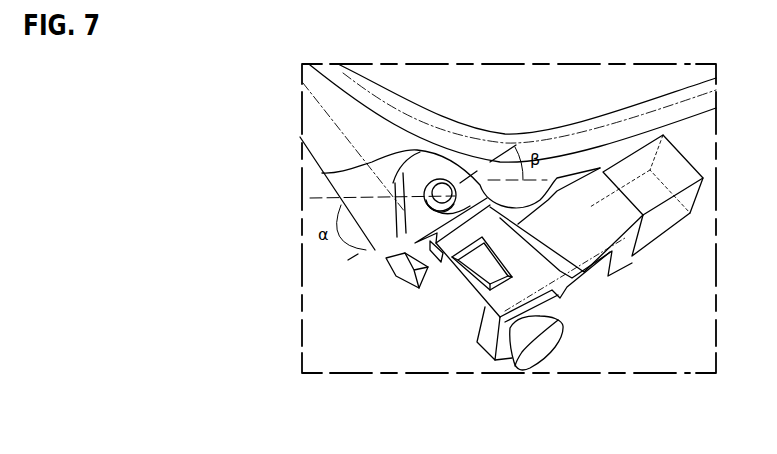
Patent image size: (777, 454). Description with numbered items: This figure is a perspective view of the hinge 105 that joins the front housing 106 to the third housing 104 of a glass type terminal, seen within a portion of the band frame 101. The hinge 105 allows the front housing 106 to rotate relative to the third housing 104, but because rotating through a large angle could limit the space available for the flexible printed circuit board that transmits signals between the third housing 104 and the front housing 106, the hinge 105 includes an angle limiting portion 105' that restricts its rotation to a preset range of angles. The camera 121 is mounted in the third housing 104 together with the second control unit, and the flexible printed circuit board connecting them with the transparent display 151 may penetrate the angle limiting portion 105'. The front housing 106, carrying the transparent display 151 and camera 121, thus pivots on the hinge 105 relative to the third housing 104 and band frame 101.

The band frame 101 is at (697, 105).
The third housing 104 is at (348, 121).
The hinge 105 is at (421, 193).
The angle limiting portion 105' is at (342, 297).
The front housing 106 is at (455, 303).
The camera 121 is at (543, 350).
The transparent display 151 is at (670, 220).